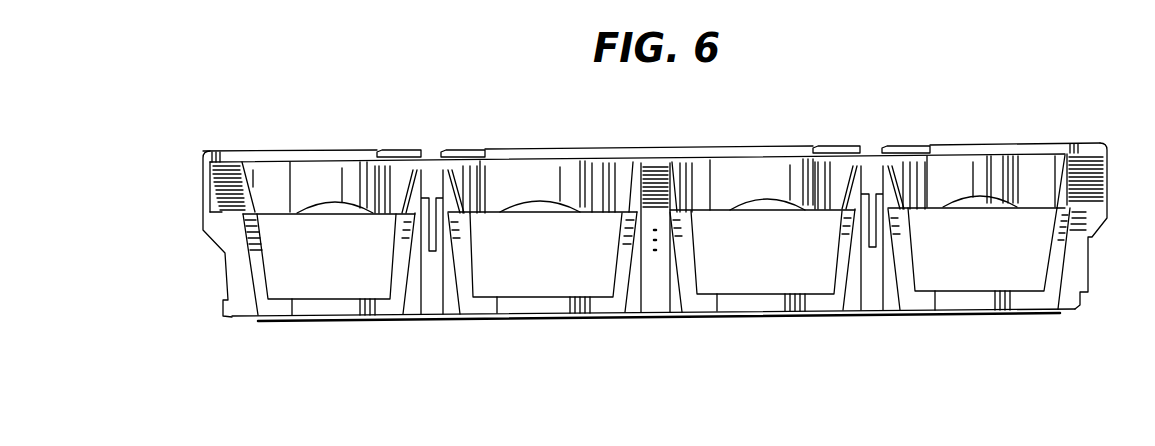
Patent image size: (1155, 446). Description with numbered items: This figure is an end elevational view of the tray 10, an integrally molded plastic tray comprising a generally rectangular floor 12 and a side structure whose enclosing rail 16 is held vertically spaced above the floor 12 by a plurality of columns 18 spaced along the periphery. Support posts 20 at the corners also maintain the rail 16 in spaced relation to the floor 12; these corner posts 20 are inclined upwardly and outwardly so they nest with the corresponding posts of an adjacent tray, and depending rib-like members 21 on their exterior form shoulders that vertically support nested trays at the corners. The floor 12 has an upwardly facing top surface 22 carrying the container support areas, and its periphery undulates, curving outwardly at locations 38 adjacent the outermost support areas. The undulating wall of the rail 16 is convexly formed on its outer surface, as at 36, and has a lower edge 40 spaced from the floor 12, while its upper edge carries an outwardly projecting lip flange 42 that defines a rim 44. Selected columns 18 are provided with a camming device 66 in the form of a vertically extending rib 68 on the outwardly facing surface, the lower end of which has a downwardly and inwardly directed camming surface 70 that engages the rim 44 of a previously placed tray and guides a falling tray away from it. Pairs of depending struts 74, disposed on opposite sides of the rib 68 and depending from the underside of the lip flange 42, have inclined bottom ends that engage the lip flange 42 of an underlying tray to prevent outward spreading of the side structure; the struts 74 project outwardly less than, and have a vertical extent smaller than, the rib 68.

The tray 10 is at (361, 127).
The floor 12 is at (1060, 310).
The rail 16 is at (611, 205).
The columns 18 is at (690, 280).
The support posts 20 is at (1072, 273).
The rib-like members 21 is at (1097, 197).
The top surface 22 is at (963, 290).
The convex portion of outer surface 36 is at (502, 178).
The outwardly curving locations 38 is at (737, 300).
The lower edge 40 is at (695, 208).
The lip flange 42 is at (1033, 143).
The rim 44 is at (1077, 150).
The camming device 66 is at (893, 218).
The rib 68 is at (827, 213).
The camming surface 70 is at (870, 245).
The struts 74 is at (830, 180).